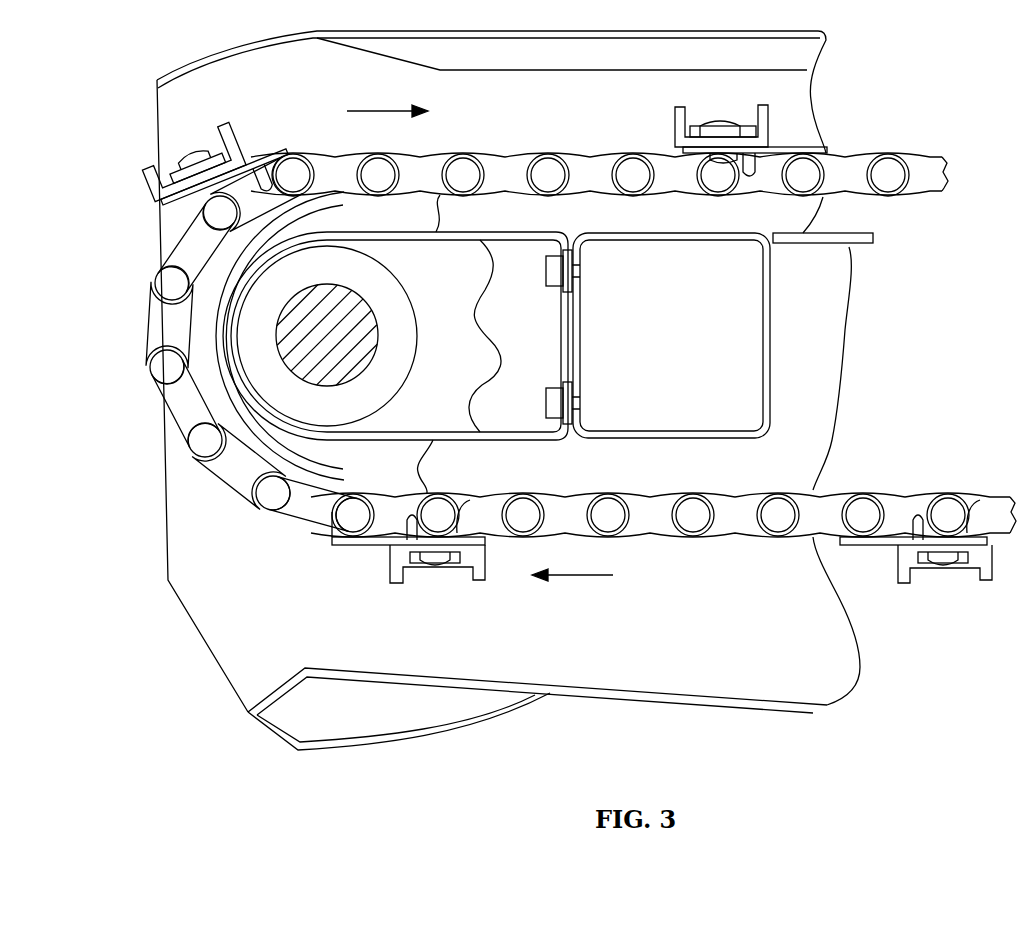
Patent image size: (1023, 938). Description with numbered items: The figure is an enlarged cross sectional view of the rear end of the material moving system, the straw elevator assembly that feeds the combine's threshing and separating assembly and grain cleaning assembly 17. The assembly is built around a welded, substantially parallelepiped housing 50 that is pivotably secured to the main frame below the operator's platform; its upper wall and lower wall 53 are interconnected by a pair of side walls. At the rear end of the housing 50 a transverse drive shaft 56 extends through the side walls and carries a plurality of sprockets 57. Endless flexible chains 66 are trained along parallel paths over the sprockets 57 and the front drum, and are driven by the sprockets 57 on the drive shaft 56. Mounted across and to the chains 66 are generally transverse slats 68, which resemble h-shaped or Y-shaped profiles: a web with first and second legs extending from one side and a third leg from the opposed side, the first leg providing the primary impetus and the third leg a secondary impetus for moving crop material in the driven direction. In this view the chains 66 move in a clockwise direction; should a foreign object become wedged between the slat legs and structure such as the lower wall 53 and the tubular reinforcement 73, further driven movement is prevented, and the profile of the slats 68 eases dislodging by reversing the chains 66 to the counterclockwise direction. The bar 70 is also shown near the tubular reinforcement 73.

The grain cleaning assembly 17 is at (216, 748).
The housing 50 is at (218, 650).
The lower wall 53 is at (642, 690).
The drive shaft 56 is at (275, 324).
The sprockets 57 is at (182, 404).
The chains 66 is at (188, 455).
The slats 68 is at (390, 566).
The support bar 70 is at (855, 247).
The tubular reinforcement 73 is at (680, 432).